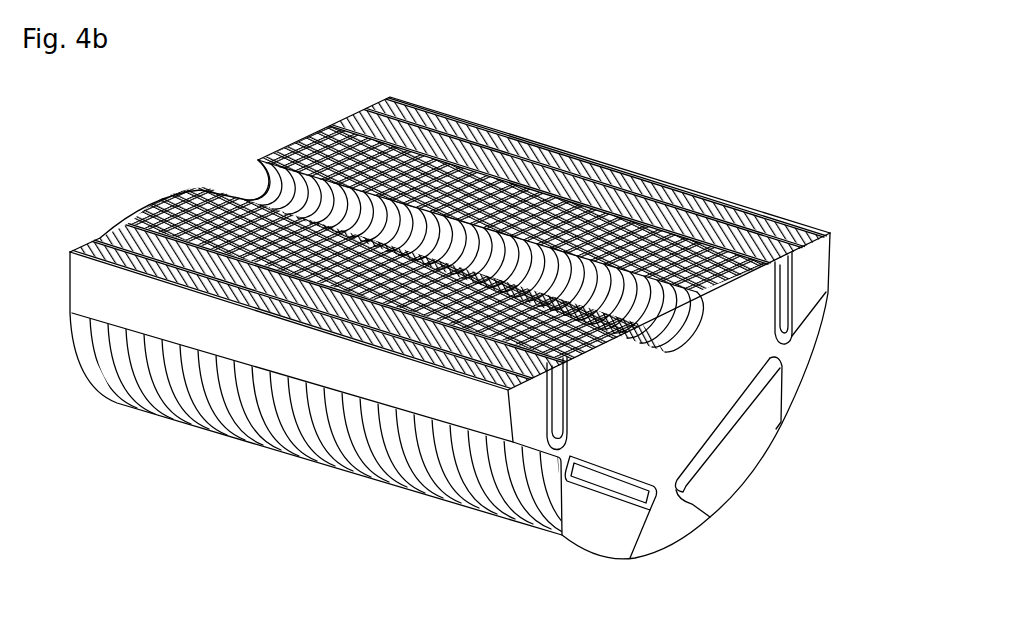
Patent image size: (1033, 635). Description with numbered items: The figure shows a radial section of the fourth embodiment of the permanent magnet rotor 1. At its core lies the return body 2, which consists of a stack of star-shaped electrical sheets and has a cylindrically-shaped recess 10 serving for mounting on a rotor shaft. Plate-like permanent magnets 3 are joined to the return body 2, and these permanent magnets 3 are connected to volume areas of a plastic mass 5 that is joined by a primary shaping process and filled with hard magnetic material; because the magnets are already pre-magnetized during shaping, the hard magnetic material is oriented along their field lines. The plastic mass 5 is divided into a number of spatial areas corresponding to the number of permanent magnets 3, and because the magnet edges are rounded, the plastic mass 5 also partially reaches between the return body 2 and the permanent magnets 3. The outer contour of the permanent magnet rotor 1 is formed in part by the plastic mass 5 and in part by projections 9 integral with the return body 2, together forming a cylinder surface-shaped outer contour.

The permanent magnet rotor 1 is at (768, 97).
The return body 2 is at (738, 317).
The permanent magnets 3 is at (134, 247).
The plastic mass 5 is at (226, 339).
The projections 9 is at (803, 347).
The cylindrically-shaped recess 10 is at (267, 187).